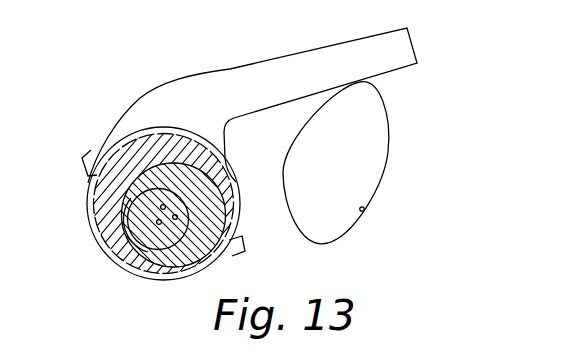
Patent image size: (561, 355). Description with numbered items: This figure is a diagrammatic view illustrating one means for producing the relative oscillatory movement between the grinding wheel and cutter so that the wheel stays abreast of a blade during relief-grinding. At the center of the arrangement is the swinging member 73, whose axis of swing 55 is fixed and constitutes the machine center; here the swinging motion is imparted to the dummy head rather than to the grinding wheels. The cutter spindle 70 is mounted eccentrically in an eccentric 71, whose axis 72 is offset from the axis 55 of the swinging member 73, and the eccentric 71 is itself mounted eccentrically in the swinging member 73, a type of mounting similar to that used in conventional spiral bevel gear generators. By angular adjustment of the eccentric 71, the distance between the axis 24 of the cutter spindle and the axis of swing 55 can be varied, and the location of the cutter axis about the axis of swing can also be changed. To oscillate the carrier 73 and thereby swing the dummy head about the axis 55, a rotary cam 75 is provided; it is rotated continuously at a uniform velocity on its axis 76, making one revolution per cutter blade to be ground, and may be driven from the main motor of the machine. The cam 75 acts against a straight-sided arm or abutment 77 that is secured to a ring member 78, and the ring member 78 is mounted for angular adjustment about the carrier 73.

The axis of the cutter spindle 24 is at (157, 220).
The axis of swing 55 is at (166, 206).
The cutter spindle 70 is at (128, 268).
The eccentric 71 is at (163, 282).
The axis of the eccentric 72 is at (177, 216).
The swinging member 73 is at (106, 248).
The rotary cam 75 is at (378, 128).
The axis of the cam 76 is at (364, 211).
The straight-sided arm 77 is at (404, 50).
The ring member 78 is at (92, 213).